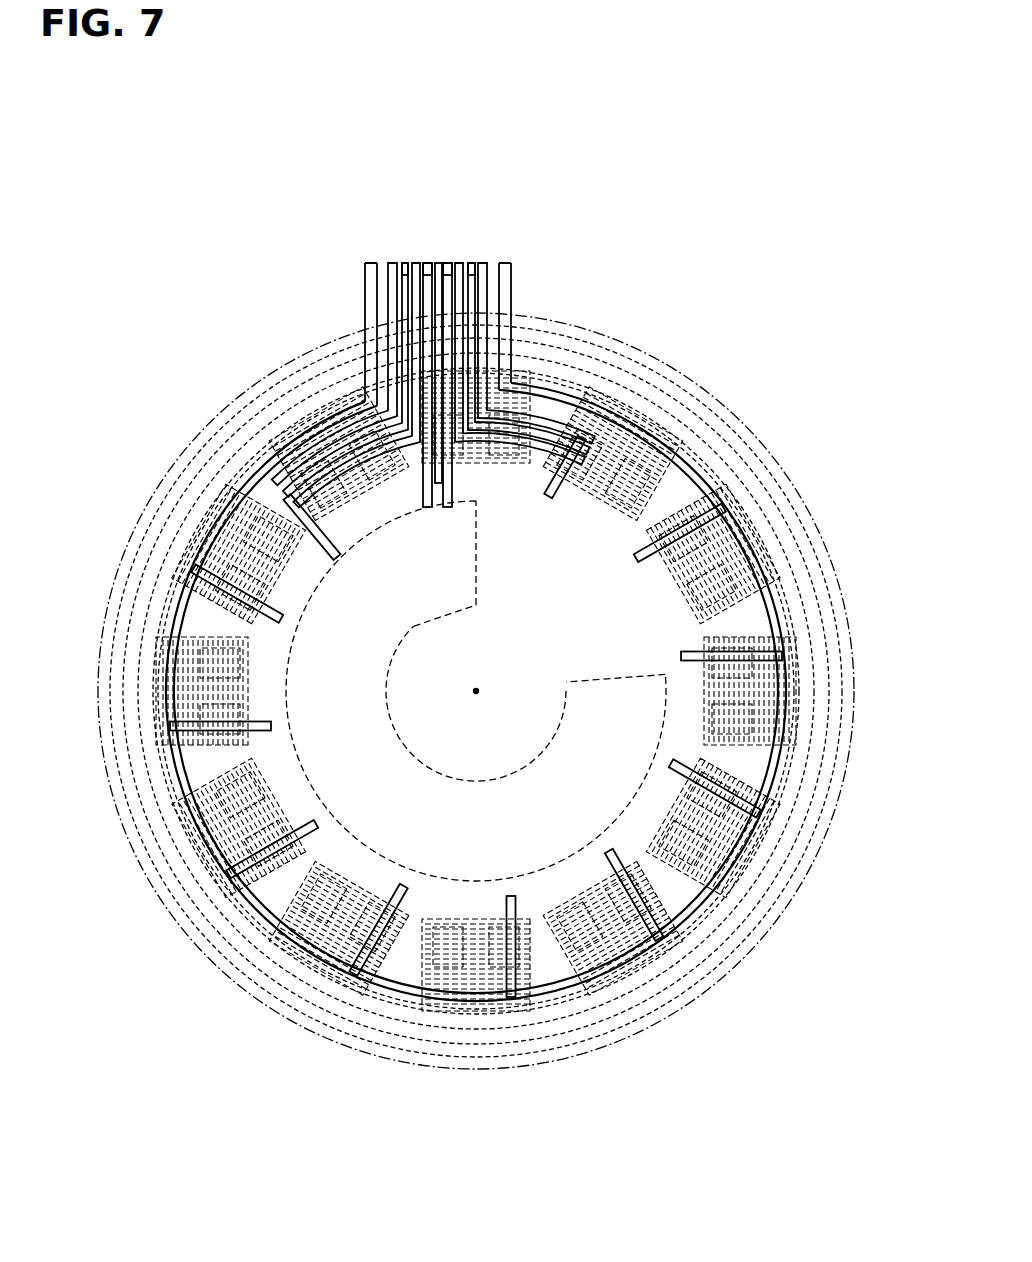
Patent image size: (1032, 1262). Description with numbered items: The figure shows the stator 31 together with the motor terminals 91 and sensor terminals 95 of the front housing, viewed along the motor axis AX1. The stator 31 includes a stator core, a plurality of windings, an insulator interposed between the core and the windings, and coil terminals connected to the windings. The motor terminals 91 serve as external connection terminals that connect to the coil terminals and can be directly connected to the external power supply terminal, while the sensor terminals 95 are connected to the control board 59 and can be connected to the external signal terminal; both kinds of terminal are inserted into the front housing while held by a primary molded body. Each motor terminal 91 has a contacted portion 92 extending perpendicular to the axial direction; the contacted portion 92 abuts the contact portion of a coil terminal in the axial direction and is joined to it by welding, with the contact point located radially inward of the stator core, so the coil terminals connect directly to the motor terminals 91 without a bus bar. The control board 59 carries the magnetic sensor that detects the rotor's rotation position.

The stator 31 is at (218, 401).
The control board 59 is at (480, 556).
The motor terminal 91 is at (369, 263).
The contacted portion 92 is at (284, 505).
The sensor terminal 95 is at (427, 263).
The axis AX1 is at (480, 689).